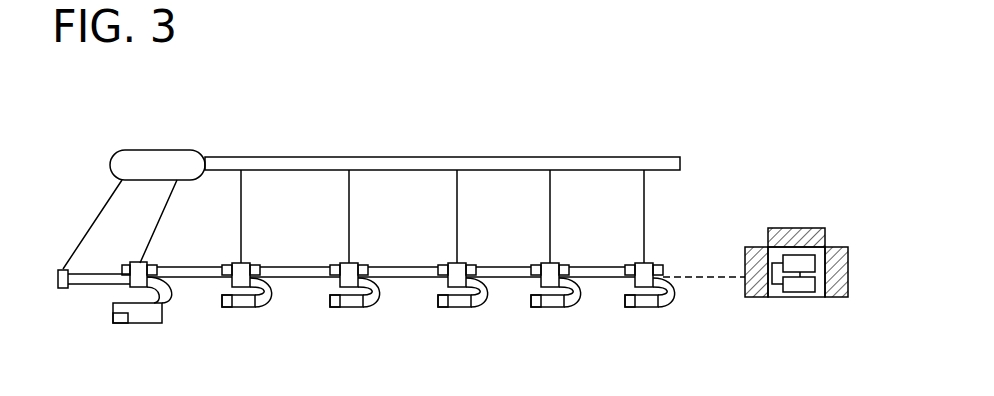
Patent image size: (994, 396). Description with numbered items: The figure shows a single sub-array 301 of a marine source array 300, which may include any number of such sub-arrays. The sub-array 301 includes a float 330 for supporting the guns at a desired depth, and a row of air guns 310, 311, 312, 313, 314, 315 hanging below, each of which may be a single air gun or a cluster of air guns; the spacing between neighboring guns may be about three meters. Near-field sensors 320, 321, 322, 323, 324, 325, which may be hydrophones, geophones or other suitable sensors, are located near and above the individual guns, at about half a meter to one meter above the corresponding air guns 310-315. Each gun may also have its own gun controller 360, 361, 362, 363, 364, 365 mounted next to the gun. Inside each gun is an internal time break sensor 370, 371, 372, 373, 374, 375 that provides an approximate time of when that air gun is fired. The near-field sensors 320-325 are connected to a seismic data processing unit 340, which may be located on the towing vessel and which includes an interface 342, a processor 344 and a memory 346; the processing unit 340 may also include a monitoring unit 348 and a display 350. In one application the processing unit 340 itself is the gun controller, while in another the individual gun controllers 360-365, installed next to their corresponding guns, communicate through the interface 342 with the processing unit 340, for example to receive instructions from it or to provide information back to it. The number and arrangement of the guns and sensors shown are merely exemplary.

The marine source array 300 is at (486, 52).
The sub-array 301 is at (348, 152).
The float 330 is at (150, 150).
The gun controller 360 is at (136, 272).
The gun controller 361 is at (240, 262).
The gun controller 362 is at (347, 262).
The gun controller 363 is at (455, 262).
The gun controller 364 is at (548, 262).
The gun controller 365 is at (642, 262).
The near-field sensor 320 is at (148, 262).
The near-field sensor 321 is at (250, 262).
The near-field sensor 322 is at (358, 262).
The near-field sensor 323 is at (466, 262).
The near-field sensor 324 is at (559, 262).
The near-field sensor 325 is at (651, 262).
The air gun 310 is at (143, 323).
The air gun 311 is at (236, 308).
The air gun 312 is at (344, 308).
The air gun 313 is at (452, 308).
The air gun 314 is at (545, 308).
The air gun 315 is at (639, 308).
The time break sensor 370 is at (118, 322).
The time break sensor 371 is at (222, 302).
The time break sensor 372 is at (330, 302).
The time break sensor 373 is at (438, 302).
The time break sensor 374 is at (531, 302).
The time break sensor 375 is at (625, 302).
The seismic data processing unit 340 is at (775, 221).
The interface 342 is at (750, 297).
The processor 344 is at (803, 286).
The memory 346 is at (803, 262).
The monitoring unit 348 is at (780, 234).
The display 350 is at (838, 287).